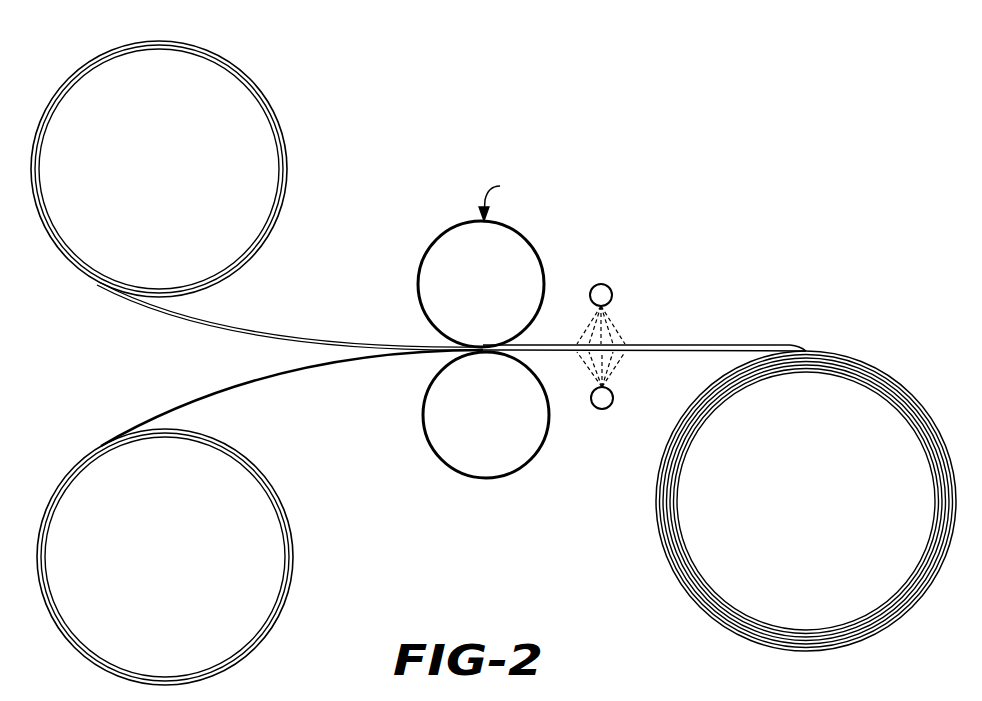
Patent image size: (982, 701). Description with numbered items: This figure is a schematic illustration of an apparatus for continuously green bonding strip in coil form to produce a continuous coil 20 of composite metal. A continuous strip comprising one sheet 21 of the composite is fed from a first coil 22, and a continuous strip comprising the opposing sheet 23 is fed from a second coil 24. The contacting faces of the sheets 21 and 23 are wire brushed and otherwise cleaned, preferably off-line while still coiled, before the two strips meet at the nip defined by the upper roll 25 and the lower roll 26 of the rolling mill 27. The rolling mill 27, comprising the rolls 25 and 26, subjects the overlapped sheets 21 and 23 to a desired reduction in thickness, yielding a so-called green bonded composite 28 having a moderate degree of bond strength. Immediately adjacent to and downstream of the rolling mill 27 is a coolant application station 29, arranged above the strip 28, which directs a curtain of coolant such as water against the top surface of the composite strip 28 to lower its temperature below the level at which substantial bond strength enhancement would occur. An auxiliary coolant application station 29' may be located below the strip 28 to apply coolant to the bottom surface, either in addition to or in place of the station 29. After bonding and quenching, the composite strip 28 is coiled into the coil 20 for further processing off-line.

The continuous coil 20 is at (683, 588).
The sheet 21 is at (266, 332).
The first coil 22 is at (287, 188).
The opposing sheet 23 is at (225, 385).
The second coil 24 is at (293, 574).
The upper roll 25 is at (538, 247).
The lower roll 26 is at (520, 467).
The rolling mill 27 is at (508, 196).
The green bonded composite 28 is at (687, 344).
The coolant application station 29 is at (621, 295).
The auxiliary coolant application station 29' is at (616, 399).